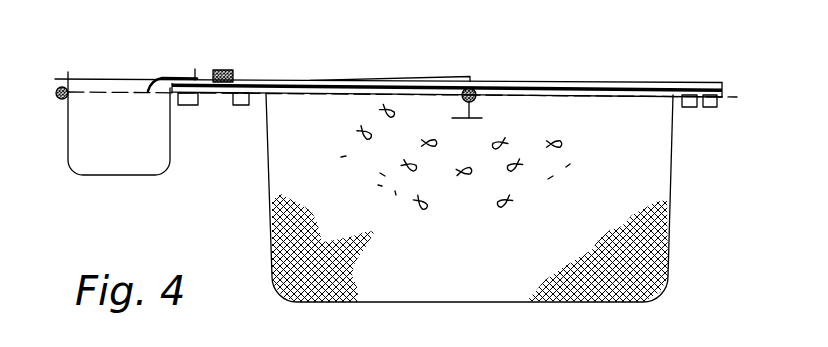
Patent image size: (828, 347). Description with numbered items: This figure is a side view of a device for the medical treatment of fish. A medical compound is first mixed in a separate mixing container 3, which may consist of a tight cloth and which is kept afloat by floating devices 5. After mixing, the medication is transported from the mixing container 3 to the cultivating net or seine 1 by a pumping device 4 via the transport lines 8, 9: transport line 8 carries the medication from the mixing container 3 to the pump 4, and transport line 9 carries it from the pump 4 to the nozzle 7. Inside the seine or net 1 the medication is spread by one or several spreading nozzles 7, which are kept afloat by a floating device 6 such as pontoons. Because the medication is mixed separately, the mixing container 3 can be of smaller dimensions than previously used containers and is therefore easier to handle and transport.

The cultivating net or seine 1 is at (453, 262).
The mixing container 3 is at (101, 141).
The pumping device 4 is at (227, 70).
The floating devices 5 is at (66, 88).
The floating device 6 is at (473, 87).
The spreading nozzle 7 is at (482, 118).
The transport line 8 is at (176, 76).
The transport line 9 is at (350, 80).